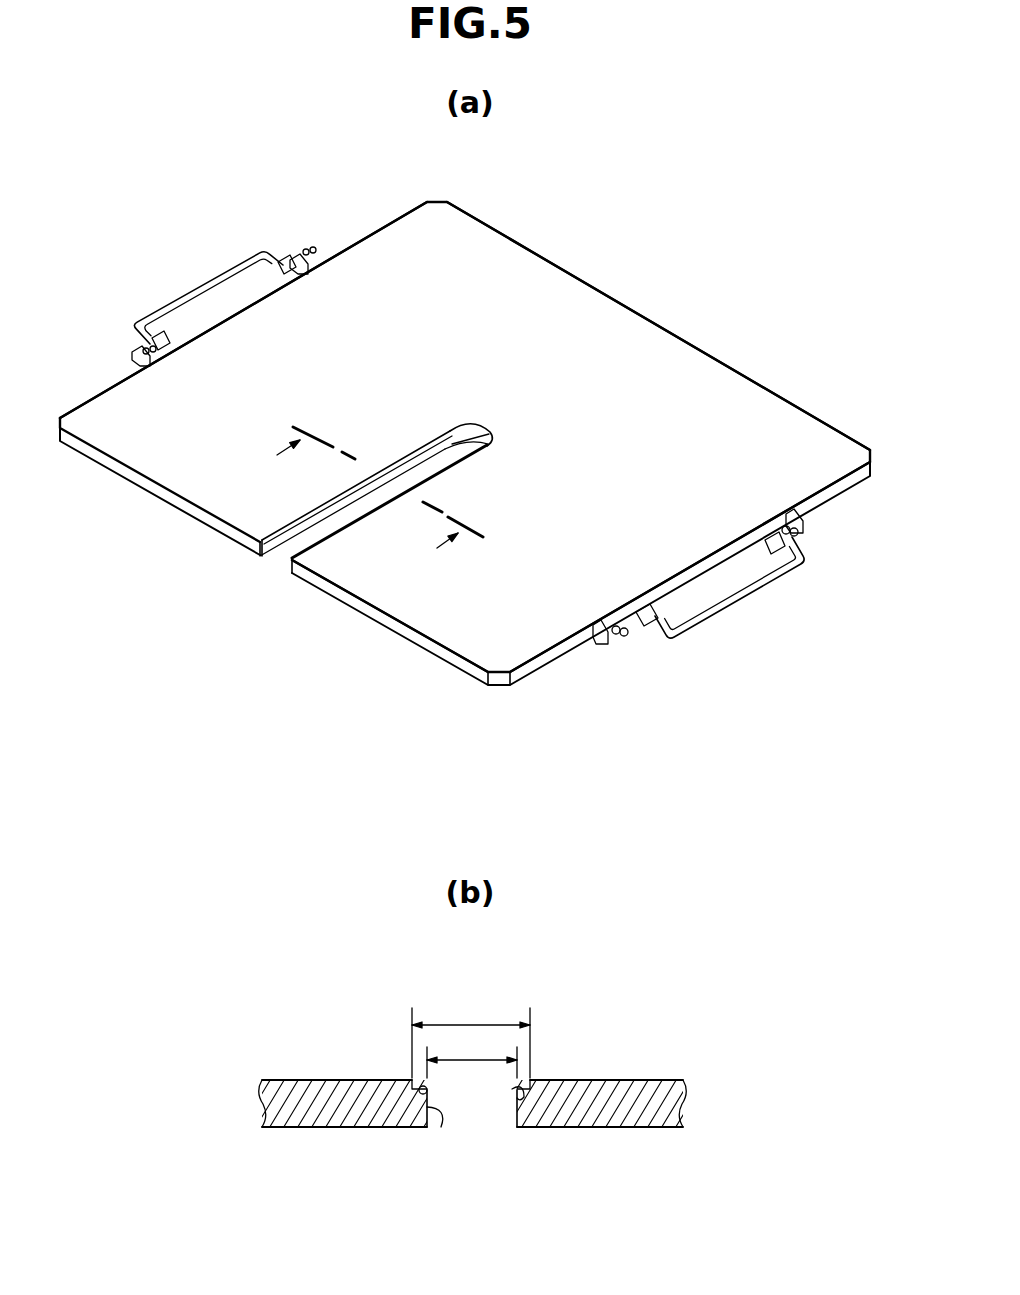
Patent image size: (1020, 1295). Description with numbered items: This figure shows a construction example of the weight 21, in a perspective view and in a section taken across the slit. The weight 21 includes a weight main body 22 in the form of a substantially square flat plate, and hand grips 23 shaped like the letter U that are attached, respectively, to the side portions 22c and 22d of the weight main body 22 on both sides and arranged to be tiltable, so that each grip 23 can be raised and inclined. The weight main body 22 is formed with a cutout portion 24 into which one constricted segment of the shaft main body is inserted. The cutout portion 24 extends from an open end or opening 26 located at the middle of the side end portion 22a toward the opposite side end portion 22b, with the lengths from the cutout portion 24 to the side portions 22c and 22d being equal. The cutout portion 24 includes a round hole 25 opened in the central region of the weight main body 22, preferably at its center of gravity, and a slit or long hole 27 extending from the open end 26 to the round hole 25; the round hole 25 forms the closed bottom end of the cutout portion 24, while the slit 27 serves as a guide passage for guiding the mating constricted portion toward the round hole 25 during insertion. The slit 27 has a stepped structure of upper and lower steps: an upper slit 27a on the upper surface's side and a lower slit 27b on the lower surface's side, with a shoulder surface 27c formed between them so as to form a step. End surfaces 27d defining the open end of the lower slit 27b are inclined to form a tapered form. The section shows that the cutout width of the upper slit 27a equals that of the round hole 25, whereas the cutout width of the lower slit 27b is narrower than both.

The weight 21 is at (465, 680).
The weight main body 22 is at (725, 365).
The side end portion 22a is at (398, 627).
The side end portion 22b is at (632, 310).
The side portion 22c is at (388, 224).
The side portion 22d is at (556, 660).
The hand grip 23 is at (200, 280).
The cutout portion 24 is at (361, 789).
The round hole 25 is at (495, 430).
The open end 26 is at (283, 557).
The slit 27 is at (361, 827).
The upper slit 27a is at (312, 511).
The lower slit 27b is at (287, 539).
The shoulder surface 27c is at (426, 1112).
The end surface 27d is at (258, 548).